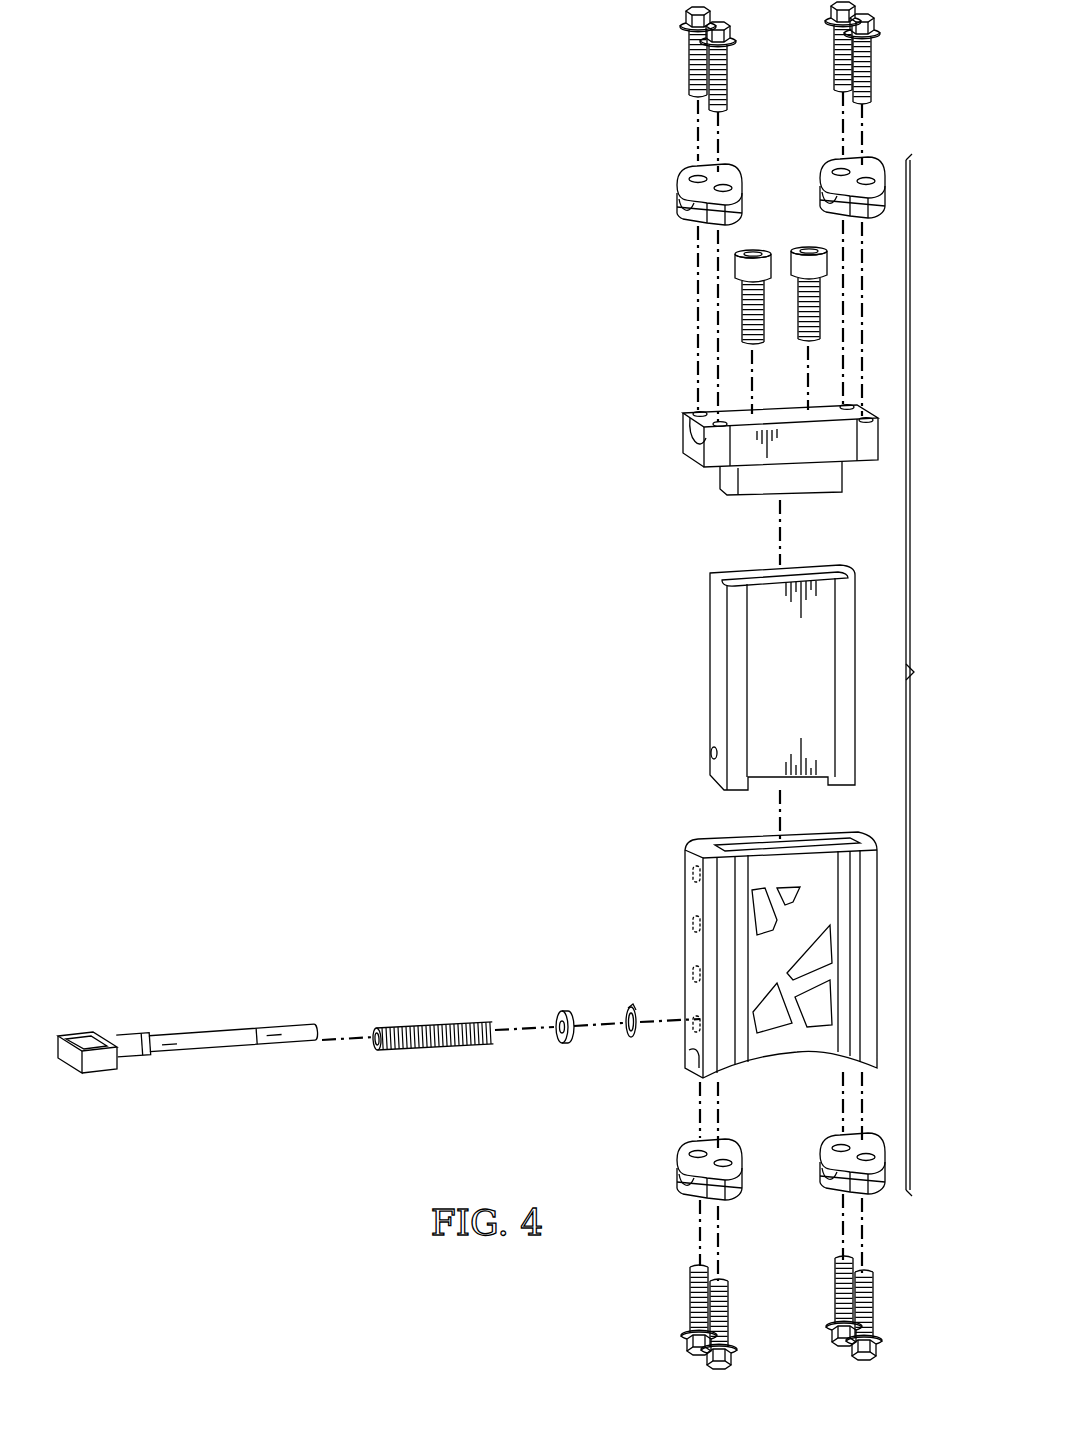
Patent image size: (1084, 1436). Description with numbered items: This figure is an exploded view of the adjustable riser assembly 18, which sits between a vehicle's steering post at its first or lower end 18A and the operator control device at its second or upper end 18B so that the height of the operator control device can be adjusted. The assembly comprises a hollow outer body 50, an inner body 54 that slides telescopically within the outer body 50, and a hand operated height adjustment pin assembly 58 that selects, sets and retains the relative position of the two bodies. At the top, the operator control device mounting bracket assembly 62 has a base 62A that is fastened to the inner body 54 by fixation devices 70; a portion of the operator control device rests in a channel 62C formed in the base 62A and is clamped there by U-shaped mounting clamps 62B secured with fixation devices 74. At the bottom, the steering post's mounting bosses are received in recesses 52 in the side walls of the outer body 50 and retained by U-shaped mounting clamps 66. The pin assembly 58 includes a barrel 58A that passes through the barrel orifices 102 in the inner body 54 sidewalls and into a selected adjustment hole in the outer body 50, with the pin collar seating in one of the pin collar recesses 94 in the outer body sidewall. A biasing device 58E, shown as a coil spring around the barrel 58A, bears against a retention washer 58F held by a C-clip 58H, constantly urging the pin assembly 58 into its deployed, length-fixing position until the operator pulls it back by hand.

The adjustable riser assembly 18 is at (928, 675).
The first or lower end 18A is at (731, 972).
The second or upper end 18B is at (729, 459).
The hollow outer body 50 is at (685, 900).
The recesses 52 is at (694, 1066).
The inner body 54 is at (742, 677).
The hand operated height adjustment pin assembly 58 is at (347, 1020).
The barrel 58A is at (205, 1062).
The biasing device 58E is at (433, 1022).
The retention washer 58F is at (563, 1046).
The C-clip 58H is at (626, 1008).
The operator control device mounting bracket assembly 62 is at (742, 259).
The base 62A is at (878, 462).
The U-shaped mounting clamp 62B is at (680, 176).
The channel 62C is at (690, 432).
The U-shaped mounting clamp 66 is at (678, 1156).
The fixation devices 70 is at (741, 318).
The fixation devices 74 is at (688, 62).
The pin collar recesses 94 is at (694, 978).
The barrel orifice 102 is at (708, 758).